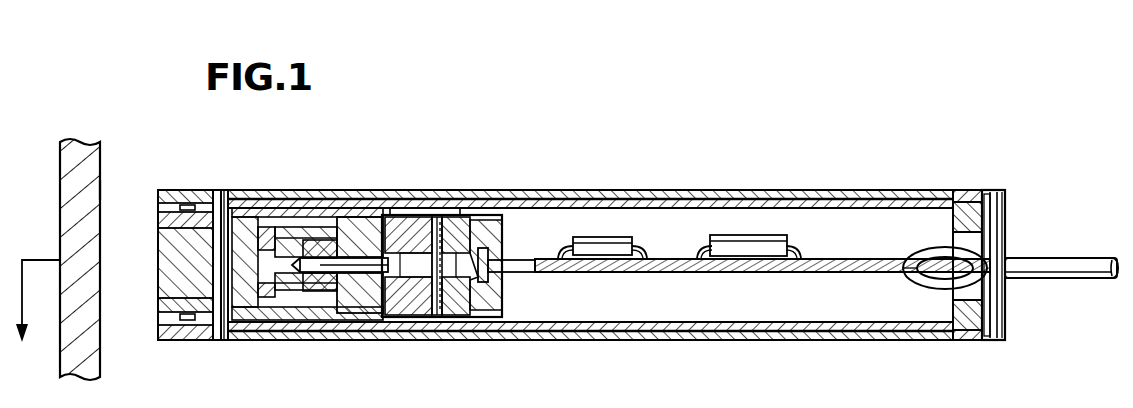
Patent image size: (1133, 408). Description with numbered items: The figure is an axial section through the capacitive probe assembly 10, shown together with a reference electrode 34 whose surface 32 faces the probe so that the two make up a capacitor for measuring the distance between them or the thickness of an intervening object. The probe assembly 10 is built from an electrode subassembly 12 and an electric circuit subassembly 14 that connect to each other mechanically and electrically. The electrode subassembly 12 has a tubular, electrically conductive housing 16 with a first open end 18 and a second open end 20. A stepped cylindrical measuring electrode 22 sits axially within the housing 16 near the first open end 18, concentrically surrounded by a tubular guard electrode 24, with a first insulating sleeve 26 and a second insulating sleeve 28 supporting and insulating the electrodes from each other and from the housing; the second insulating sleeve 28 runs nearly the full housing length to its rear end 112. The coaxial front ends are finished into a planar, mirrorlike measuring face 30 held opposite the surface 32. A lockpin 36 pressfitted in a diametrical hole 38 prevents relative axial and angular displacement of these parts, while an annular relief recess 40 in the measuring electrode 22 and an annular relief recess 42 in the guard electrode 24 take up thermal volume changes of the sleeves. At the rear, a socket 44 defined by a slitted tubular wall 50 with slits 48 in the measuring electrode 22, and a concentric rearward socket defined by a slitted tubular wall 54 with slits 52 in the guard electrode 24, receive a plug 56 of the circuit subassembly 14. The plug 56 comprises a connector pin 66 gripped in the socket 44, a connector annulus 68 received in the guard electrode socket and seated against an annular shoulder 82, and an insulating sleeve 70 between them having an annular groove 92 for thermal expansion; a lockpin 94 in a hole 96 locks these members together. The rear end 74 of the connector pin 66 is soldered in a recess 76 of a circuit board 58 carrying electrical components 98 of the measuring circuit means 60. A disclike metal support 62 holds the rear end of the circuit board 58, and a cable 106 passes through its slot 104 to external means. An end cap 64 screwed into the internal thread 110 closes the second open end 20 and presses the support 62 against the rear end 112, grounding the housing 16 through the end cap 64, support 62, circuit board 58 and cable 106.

The capacitive probe assembly 10 is at (703, 186).
The electrode subassembly 12 is at (183, 186).
The electric circuit subassembly 14 is at (1032, 232).
The housing 16 is at (645, 192).
The first open end 18 is at (158, 338).
The second open end 20 is at (1005, 192).
The measuring electrode 22 is at (165, 281).
The guard electrode 24 is at (167, 312).
The first insulating sleeve 26 is at (263, 308).
The second insulating sleeve 28 is at (343, 325).
The measuring face 30 is at (157, 207).
The surface 32 is at (100, 176).
The reference electrode 34 is at (80, 142).
The lockpin 36 is at (220, 338).
The hole 38 is at (230, 340).
The annular relief recess 40 is at (187, 230).
The annular relief recess 42 is at (186, 322).
The socket 44 is at (308, 238).
The slits 48 is at (385, 290).
The tubular wall 50 is at (308, 293).
The slits 52 is at (450, 220).
The tubular wall 54 is at (391, 212).
The plug 56 is at (504, 223).
The circuit board 58 is at (702, 274).
The measuring circuit means 60 is at (798, 248).
The support 62 is at (953, 333).
The end cap 64 is at (1004, 322).
The connector pin 66 is at (502, 338).
The connector annulus 68 is at (420, 222).
The insulating sleeve 70 is at (470, 268).
The rear end 74 is at (512, 271).
The recess 76 is at (508, 266).
The annular shoulder 82 is at (383, 218).
The annular groove 92 is at (487, 283).
The lockpin 94 is at (440, 220).
The hole 96 is at (485, 208).
The electrical components 98 is at (708, 240).
The slot 104 is at (963, 236).
The cable 106 is at (1082, 279).
The internal thread 110 is at (1000, 340).
The rear end 112 is at (968, 198).